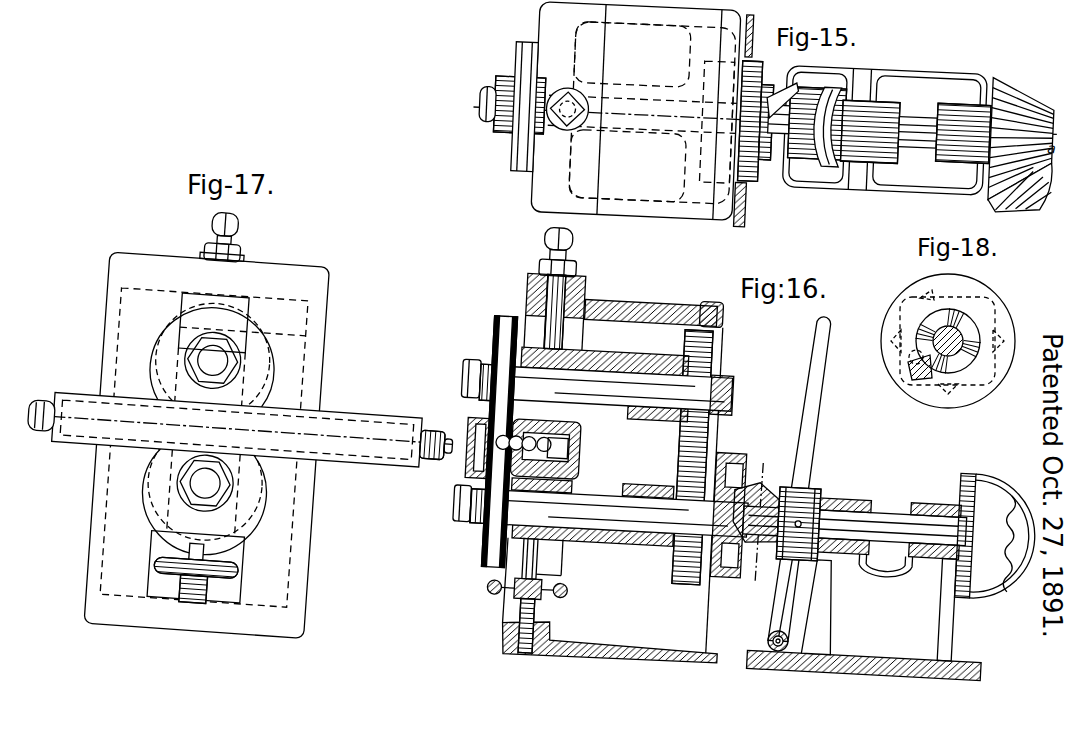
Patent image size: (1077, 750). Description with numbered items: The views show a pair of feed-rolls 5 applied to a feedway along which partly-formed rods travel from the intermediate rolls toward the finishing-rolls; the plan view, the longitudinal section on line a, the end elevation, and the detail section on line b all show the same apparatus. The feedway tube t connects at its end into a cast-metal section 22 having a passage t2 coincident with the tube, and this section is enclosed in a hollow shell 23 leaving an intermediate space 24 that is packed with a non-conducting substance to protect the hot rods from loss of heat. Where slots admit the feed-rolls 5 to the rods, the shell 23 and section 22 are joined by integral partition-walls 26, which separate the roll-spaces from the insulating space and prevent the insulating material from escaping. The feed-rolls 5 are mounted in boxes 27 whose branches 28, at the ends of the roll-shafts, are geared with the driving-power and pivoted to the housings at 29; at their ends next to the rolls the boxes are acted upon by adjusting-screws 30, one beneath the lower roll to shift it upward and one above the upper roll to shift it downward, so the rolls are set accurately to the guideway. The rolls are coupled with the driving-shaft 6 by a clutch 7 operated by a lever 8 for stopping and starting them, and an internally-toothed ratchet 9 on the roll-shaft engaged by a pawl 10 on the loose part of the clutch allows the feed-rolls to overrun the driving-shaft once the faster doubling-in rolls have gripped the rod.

In FIG. 15, the feed-rolls 5 is at (522, 152).
In FIG. 17, the feed-rolls 5 is at (288, 344).
In FIG. 16, the feed-rolls 5 is at (497, 335).
In FIG. 15, the adjusting-screws 30 is at (588, 98).
In FIG. 17, the adjusting-screws 30 is at (237, 231).
In FIG. 16, the adjusting-screws 30 is at (568, 282).
In FIG. 15, the section line a a is at (484, 105).
In FIG. 15, the branches 28 is at (754, 42).
In FIG. 15, the clutch 7 is at (786, 84).
In FIG. 16, the clutch 7 is at (795, 480).
In FIG. 15, the internally-toothed ratchet 9 is at (764, 170).
In FIG. 16, the internally-toothed ratchet 9 is at (718, 460).
In FIG. 18, the internally-toothed ratchet 9 is at (1005, 320).
In FIG. 15, the lever 8 is at (828, 156).
In FIG. 16, the lever 8 is at (829, 424).
In FIG. 17, the hollow shell 23 is at (352, 396).
In FIG. 17, the feedway tube t is at (46, 405).
In FIG. 16, the intermediate space 24 is at (489, 448).
In FIG. 16, the integral partition-walls 26 is at (510, 436).
In FIG. 16, the boxes 27 is at (648, 348).
In FIG. 16, the pivot 29 is at (739, 384).
In FIG. 16, the cast-metal section 22 is at (576, 448).
In FIG. 16, the passage t2 is at (576, 446).
In FIG. 16, the pawl 10 is at (748, 452).
In FIG. 18, the pawl 10 is at (918, 381).
In FIG. 16, the section line b b is at (759, 522).
In FIG. 16, the driving-shaft 6 is at (896, 500).